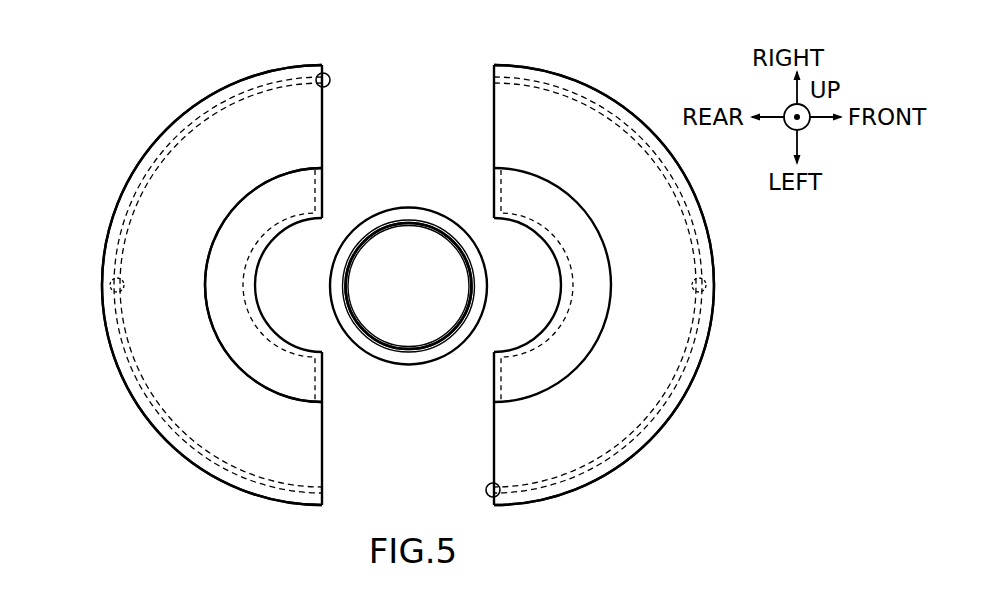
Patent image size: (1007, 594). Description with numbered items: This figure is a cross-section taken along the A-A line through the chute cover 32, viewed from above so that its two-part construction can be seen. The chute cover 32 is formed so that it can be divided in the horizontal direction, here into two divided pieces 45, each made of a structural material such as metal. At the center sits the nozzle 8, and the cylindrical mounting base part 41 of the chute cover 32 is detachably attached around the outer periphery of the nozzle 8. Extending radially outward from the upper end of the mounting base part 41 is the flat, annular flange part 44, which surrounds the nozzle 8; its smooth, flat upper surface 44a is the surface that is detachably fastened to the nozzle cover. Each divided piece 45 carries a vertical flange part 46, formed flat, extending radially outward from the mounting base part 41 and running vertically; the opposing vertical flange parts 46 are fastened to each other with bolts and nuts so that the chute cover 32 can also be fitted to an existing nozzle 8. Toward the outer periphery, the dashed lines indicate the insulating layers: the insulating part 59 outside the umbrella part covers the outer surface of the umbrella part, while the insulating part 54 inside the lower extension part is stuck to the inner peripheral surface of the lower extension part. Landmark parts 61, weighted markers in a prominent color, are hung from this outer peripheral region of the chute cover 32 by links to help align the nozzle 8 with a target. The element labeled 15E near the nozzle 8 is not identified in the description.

The chute cover 32 is at (620, 84).
The divided piece 45 is at (100, 200).
The insulating part outside the umbrella part 59 is at (164, 132).
The insulating part inside the lower extension part 54 is at (155, 168).
The landmark part 61 is at (333, 80).
The flange part 44 is at (221, 219).
The upper surface of the flange part 44a is at (265, 197).
The mounting base part 41 is at (262, 326).
The vertical flange part 46 is at (320, 192).
The nozzle 8 is at (326, 276).
The shaft 15E is at (412, 357).